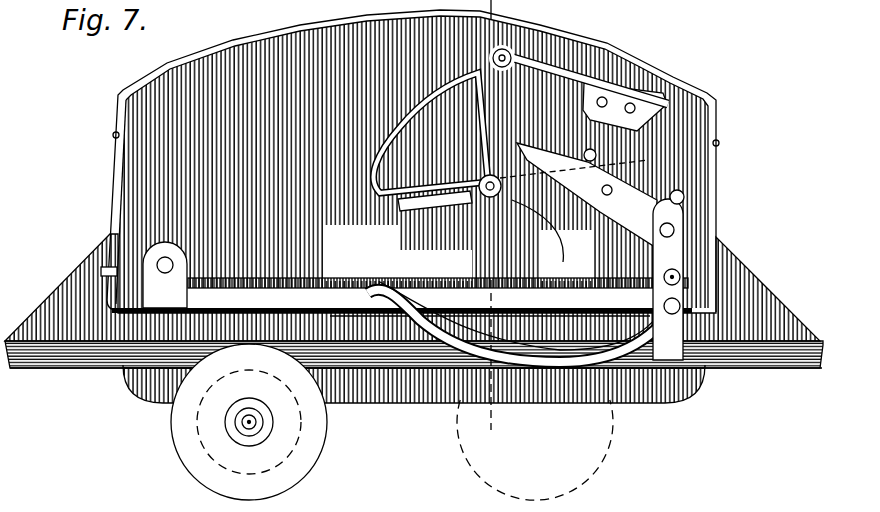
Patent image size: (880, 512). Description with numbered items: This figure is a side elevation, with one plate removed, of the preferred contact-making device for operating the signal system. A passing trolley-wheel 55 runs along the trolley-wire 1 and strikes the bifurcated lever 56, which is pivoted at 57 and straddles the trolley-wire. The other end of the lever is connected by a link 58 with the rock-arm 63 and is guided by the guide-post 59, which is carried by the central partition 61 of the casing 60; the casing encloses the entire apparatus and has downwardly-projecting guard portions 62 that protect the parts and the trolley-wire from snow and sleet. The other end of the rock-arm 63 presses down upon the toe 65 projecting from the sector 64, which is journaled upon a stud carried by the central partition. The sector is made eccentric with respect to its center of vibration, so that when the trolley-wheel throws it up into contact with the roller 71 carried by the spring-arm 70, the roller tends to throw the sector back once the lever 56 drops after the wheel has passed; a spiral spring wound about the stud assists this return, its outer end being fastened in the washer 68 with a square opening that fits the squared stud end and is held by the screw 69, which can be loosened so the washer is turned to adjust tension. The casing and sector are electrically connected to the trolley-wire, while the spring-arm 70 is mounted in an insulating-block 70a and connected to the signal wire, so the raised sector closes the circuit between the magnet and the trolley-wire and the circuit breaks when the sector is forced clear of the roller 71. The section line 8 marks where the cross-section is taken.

The trolley-wire 1 is at (10, 362).
The section line 8 8 is at (486, 227).
The trolley-wheel 55 is at (190, 463).
The bifurcated lever 56 is at (262, 300).
The pivot 57 is at (165, 273).
The link 58 is at (690, 246).
The guide-post 59 is at (703, 376).
The casing 60 is at (718, 114).
The central partition 61 is at (672, 157).
The guard portions 62 is at (647, 403).
The rock-arm 63 is at (632, 203).
The sector 64 is at (387, 200).
The toe 65 is at (521, 281).
The washer 68 is at (480, 203).
The screw 69 is at (492, 205).
The spring-arm 70 is at (519, 148).
The insulating-block 70a is at (630, 95).
The roller 71 is at (511, 47).